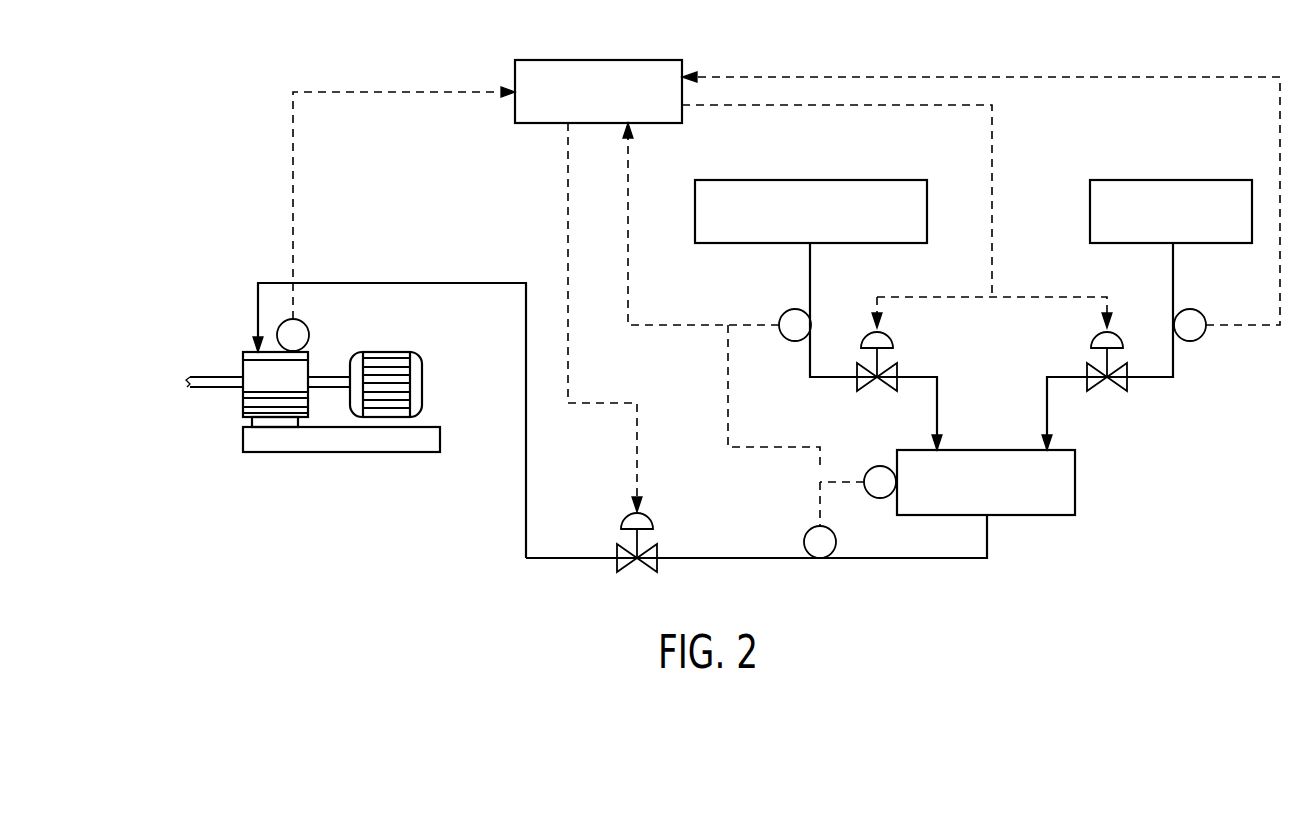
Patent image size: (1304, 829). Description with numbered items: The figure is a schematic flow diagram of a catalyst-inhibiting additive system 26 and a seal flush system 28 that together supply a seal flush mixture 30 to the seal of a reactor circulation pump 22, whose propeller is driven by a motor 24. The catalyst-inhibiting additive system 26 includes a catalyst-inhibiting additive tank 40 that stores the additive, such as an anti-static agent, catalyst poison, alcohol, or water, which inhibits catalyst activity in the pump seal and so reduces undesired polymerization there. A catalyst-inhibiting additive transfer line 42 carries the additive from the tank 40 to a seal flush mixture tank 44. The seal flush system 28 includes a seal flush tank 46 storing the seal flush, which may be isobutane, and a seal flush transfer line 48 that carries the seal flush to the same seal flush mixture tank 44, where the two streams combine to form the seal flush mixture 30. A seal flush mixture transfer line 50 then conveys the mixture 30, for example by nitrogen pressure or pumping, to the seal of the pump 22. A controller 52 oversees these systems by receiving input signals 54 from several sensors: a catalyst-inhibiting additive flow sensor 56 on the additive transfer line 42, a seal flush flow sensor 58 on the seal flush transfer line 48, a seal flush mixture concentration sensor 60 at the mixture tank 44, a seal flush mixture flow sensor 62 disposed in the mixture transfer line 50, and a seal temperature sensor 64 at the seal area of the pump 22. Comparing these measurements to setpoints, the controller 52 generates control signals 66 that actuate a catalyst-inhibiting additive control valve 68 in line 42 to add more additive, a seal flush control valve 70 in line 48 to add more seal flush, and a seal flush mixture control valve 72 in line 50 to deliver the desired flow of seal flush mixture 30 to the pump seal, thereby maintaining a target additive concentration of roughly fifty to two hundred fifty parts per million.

The pump 22 is at (242, 405).
The motor 24 is at (421, 377).
The catalyst-inhibiting additive system 26 is at (830, 149).
The seal flush system 28 is at (1175, 134).
The seal flush mixture 30 is at (1076, 488).
The catalyst-inhibiting additive tank 40 is at (900, 180).
The catalyst-inhibiting additive transfer line 42 is at (818, 380).
The seal flush mixture tank 44 is at (965, 450).
The seal flush tank 46 is at (1235, 180).
The seal flush transfer line 48 is at (1158, 379).
The seal flush mixture transfer line 50 is at (888, 561).
The controller 52 is at (665, 60).
The input signal 54 is at (425, 92).
The catalyst-inhibiting additive flow sensor 56 is at (790, 310).
The seal flush flow sensor 58 is at (1193, 310).
The seal flush mixture concentration sensor 60 is at (878, 467).
The seal flush mixture flow sensor 62 is at (808, 531).
The seal temperature sensor 64 is at (305, 323).
The control signal 66 is at (568, 215).
The catalyst-inhibiting additive control valve 68 is at (890, 342).
The seal flush control valve 70 is at (1120, 338).
The seal flush mixture control valve 72 is at (650, 516).